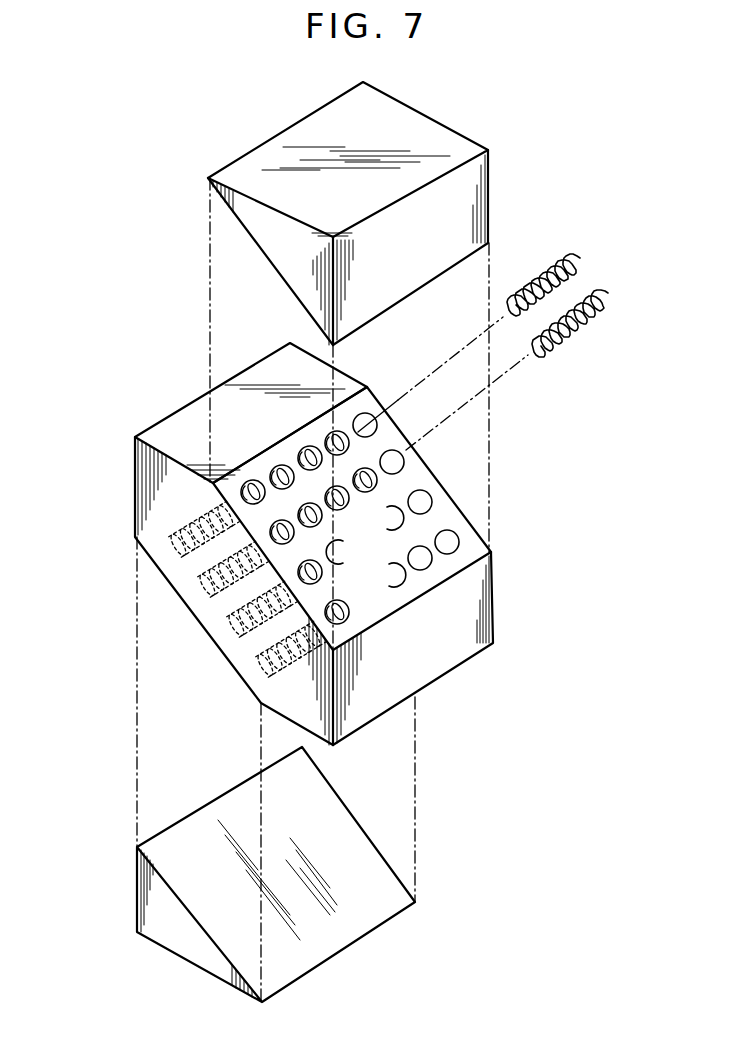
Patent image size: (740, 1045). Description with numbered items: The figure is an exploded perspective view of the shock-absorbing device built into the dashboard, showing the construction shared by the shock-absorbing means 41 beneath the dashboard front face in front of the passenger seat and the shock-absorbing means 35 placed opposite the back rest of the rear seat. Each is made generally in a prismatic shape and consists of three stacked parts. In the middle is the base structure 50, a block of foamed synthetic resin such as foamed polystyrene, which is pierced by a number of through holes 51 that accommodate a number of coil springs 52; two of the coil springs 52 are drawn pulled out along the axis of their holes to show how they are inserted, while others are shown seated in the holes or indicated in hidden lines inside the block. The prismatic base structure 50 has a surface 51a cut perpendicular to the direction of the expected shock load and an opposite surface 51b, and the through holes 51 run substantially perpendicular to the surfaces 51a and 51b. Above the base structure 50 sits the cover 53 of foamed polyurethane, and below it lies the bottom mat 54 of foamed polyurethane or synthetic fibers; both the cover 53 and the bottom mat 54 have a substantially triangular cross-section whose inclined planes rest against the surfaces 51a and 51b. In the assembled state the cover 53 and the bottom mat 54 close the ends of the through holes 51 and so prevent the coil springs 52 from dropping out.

The shock-absorbing means 41 is at (162, 361).
The shock-absorbing means 35 is at (361, 542).
The base structure 50 is at (153, 473).
The through holes 51 is at (395, 461).
The surface 51a is at (472, 542).
The surface 51b is at (202, 625).
The coil springs 52 is at (609, 292).
The cover 53 is at (447, 145).
The bottom mat 54 is at (328, 933).